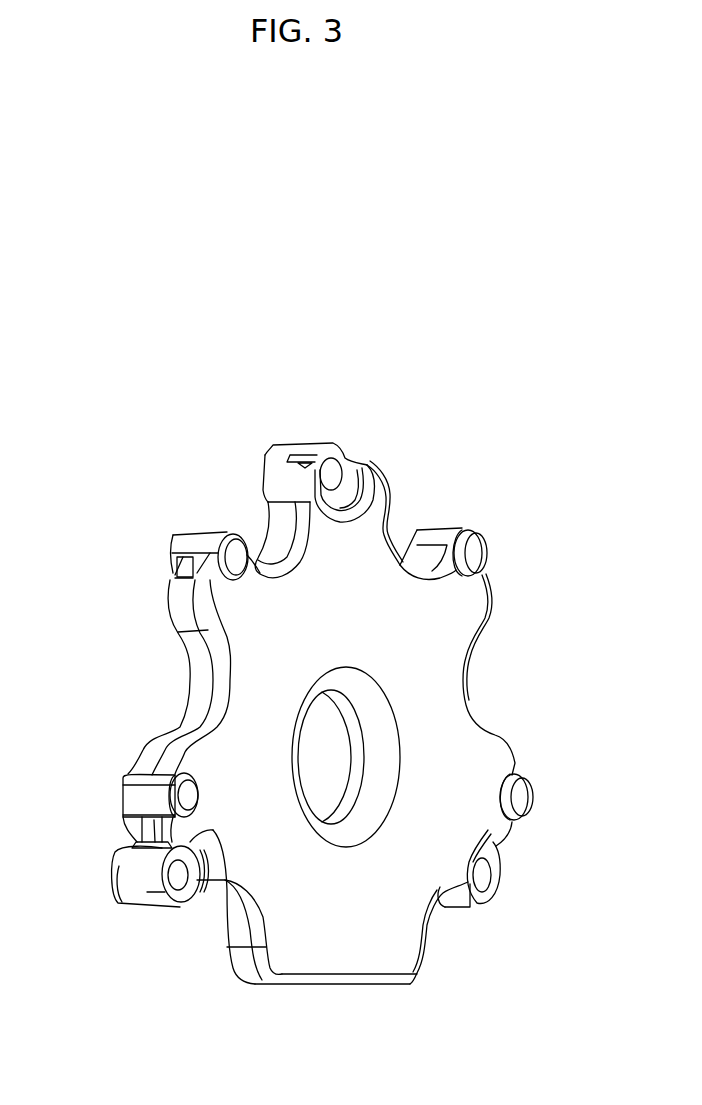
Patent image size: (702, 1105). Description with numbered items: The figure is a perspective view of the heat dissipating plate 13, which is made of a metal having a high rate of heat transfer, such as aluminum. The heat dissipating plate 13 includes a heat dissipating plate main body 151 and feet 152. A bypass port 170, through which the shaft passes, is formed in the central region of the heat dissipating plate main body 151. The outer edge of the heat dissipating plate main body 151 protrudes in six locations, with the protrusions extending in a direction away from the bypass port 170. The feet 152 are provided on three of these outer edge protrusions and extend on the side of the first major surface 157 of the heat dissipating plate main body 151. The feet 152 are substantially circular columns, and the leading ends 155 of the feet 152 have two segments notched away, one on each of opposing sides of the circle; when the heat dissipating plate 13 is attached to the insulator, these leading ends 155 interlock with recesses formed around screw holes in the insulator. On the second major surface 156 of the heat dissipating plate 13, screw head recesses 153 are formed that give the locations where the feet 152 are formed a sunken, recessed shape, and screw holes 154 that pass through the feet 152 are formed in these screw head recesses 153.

The heat dissipating plate 13 is at (94, 346).
The heat dissipating plate main body 151 is at (350, 942).
The feet 152 is at (297, 448).
The screw head recesses 153 is at (335, 448).
The screw holes 154 is at (334, 474).
The leading ends 155 is at (268, 460).
The second major surface 156 is at (443, 692).
The first major surface 157 is at (190, 680).
The bypass port 170 is at (322, 722).